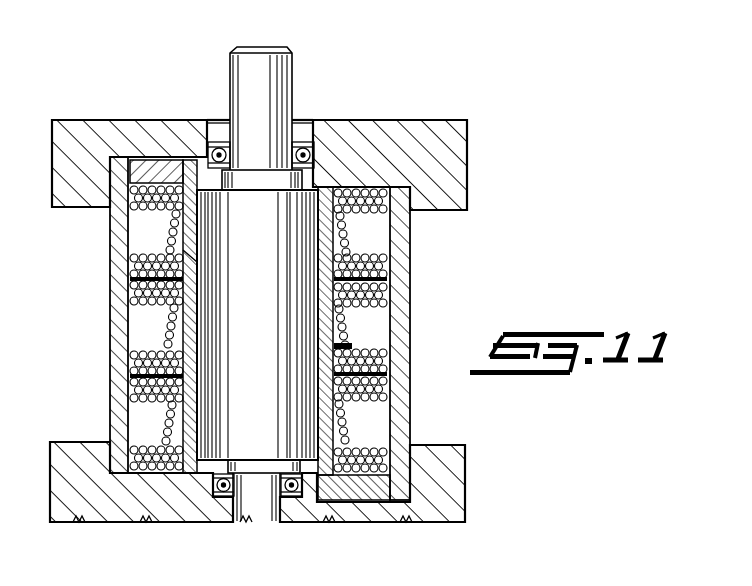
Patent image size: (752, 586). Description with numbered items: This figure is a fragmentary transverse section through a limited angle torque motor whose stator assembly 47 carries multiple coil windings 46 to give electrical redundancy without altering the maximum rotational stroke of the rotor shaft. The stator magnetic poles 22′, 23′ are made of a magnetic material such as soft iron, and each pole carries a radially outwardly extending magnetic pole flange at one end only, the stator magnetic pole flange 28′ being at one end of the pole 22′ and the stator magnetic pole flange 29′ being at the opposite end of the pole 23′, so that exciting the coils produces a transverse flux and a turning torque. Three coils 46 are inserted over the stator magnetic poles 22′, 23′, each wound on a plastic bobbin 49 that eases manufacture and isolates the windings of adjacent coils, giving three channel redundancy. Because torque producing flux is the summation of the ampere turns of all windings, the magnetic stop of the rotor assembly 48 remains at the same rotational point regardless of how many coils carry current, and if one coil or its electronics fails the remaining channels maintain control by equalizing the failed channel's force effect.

The stator assembly 47 is at (418, 240).
The plastic bobbin 49 is at (337, 250).
The stator magnetic pole 22′ is at (188, 327).
The stator magnetic pole flange 28′ is at (167, 166).
The stator magnetic pole flange 29′ is at (357, 492).
The coil winding 46 is at (357, 245).
The stator magnetic pole 23′ is at (347, 344).
The rotor assembly 48 is at (196, 256).